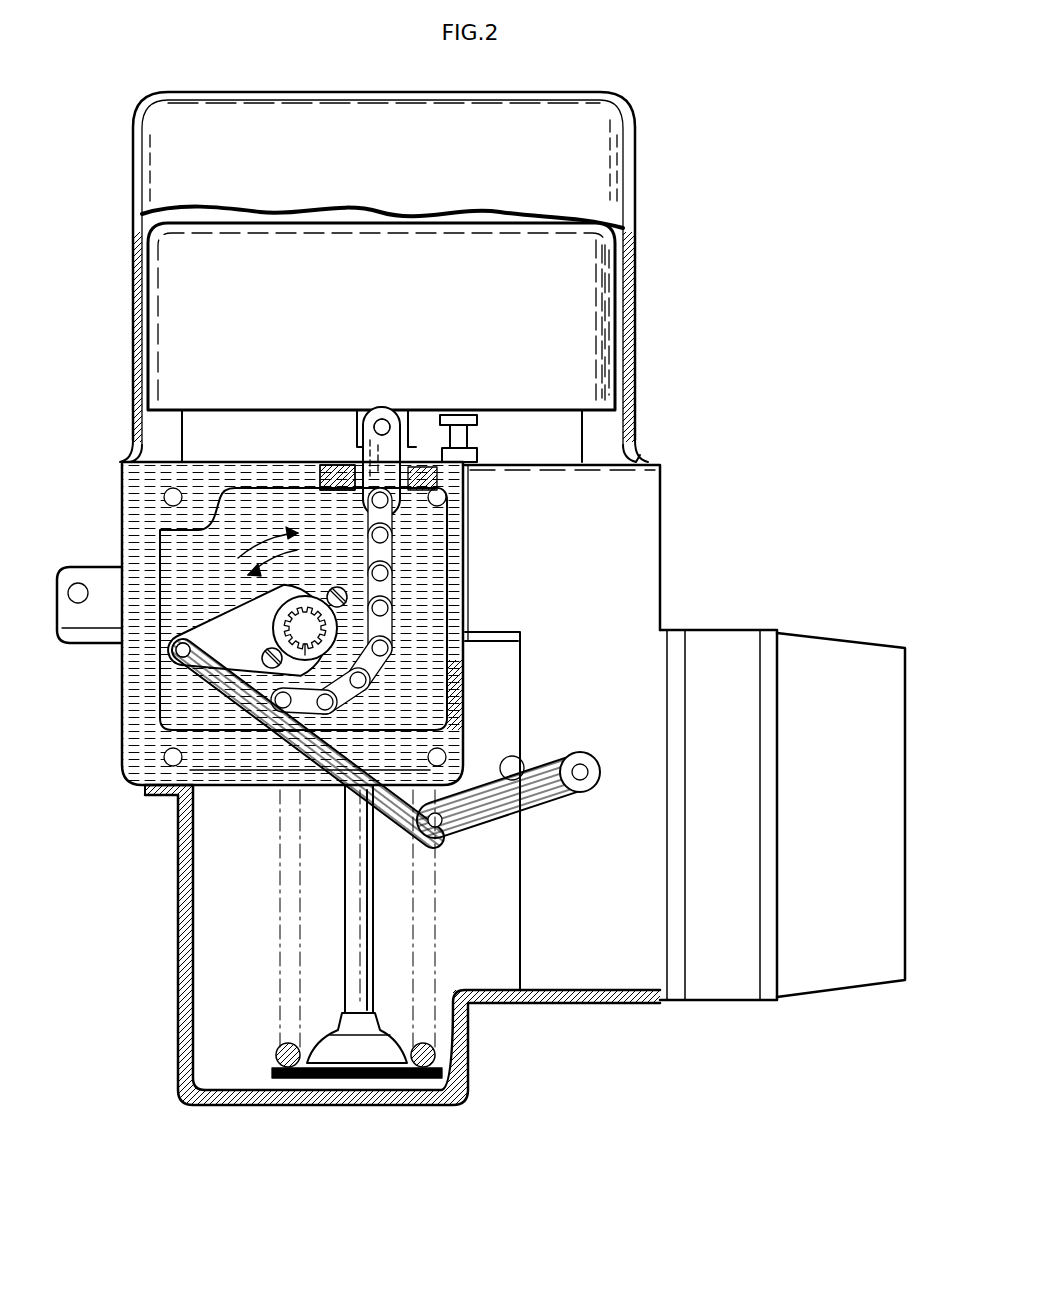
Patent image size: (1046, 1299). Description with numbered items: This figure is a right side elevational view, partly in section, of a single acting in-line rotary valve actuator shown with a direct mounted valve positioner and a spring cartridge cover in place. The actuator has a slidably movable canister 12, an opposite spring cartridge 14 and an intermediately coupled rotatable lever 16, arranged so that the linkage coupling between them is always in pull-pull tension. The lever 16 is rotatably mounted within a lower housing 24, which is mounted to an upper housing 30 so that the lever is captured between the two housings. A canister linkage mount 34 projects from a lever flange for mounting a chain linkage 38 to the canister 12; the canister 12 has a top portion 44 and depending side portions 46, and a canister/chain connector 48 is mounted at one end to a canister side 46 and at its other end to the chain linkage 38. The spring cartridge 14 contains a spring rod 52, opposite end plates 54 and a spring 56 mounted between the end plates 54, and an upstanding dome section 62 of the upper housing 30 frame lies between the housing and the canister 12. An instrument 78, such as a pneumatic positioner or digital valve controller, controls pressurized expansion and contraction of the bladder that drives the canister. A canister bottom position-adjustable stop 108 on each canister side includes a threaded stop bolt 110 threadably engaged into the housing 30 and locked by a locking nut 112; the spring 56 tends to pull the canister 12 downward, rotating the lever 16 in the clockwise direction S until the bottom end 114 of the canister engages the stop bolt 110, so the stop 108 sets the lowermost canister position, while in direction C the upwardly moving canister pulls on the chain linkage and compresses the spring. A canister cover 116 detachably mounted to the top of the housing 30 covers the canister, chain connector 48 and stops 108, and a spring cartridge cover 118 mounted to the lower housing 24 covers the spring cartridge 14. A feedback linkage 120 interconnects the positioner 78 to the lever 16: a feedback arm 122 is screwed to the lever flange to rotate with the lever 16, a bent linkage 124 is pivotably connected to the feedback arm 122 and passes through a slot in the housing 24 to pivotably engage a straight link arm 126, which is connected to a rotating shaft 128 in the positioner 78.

The canister 12 is at (282, 248).
The spring cartridge 14 is at (264, 917).
The rotatable lever 16 is at (341, 592).
The lower housing 24 is at (120, 722).
The upper housing 30 is at (668, 522).
The canister linkage mount 34 is at (345, 708).
The chain linkage 38 is at (350, 475).
The top portion 44 is at (383, 218).
The side portions 46 is at (598, 332).
The canister/chain connector 48 is at (368, 410).
The spring rod 52 is at (348, 880).
The end plates 54 is at (330, 1050).
The spring 56 is at (275, 1052).
The dome section 62 is at (200, 445).
The instrument 78 is at (723, 635).
The position-adjustable stop 108 is at (484, 435).
The threaded stop bolt 110 is at (470, 415).
The locking nut 112 is at (490, 462).
The bottom end 114 is at (392, 428).
The canister cover 116 is at (628, 97).
The spring cartridge cover 118 is at (180, 880).
The feedback linkage 120 is at (492, 835).
The feedback arm 122 is at (168, 655).
The bent linkage 124 is at (285, 765).
The straight link arm 126 is at (525, 770).
The rotating shaft 128 is at (585, 772).